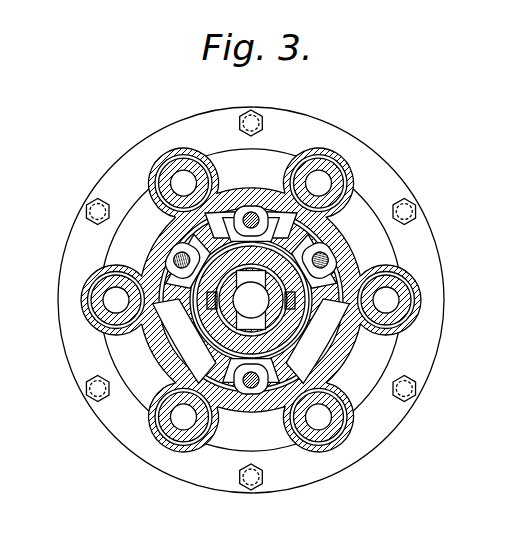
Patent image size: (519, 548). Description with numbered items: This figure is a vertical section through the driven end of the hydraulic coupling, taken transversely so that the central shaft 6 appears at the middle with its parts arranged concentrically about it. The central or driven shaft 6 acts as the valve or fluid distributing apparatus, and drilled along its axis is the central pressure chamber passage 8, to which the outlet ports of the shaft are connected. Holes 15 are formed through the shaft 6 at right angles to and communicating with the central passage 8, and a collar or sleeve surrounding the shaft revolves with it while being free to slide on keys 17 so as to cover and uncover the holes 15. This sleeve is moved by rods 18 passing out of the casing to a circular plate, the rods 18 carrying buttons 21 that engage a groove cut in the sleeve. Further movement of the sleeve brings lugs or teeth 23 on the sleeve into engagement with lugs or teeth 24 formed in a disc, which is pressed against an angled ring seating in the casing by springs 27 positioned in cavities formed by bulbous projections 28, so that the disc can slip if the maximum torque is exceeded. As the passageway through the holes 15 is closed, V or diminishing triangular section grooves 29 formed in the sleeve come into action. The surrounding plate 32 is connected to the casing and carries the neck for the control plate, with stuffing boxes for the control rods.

The central shaft 6 is at (277, 313).
The central pressure chamber passage 8 is at (251, 300).
The holes 15 is at (243, 270).
The keys 17 is at (296, 300).
The rods 18 is at (178, 257).
The buttons 21 is at (187, 248).
The lugs or teeth 23 is at (229, 222).
The lugs or teeth 24 is at (115, 350).
The springs 27 is at (100, 313).
The bulbous projections 28 is at (88, 295).
The grooves 29 is at (263, 255).
The plate 32 is at (432, 345).